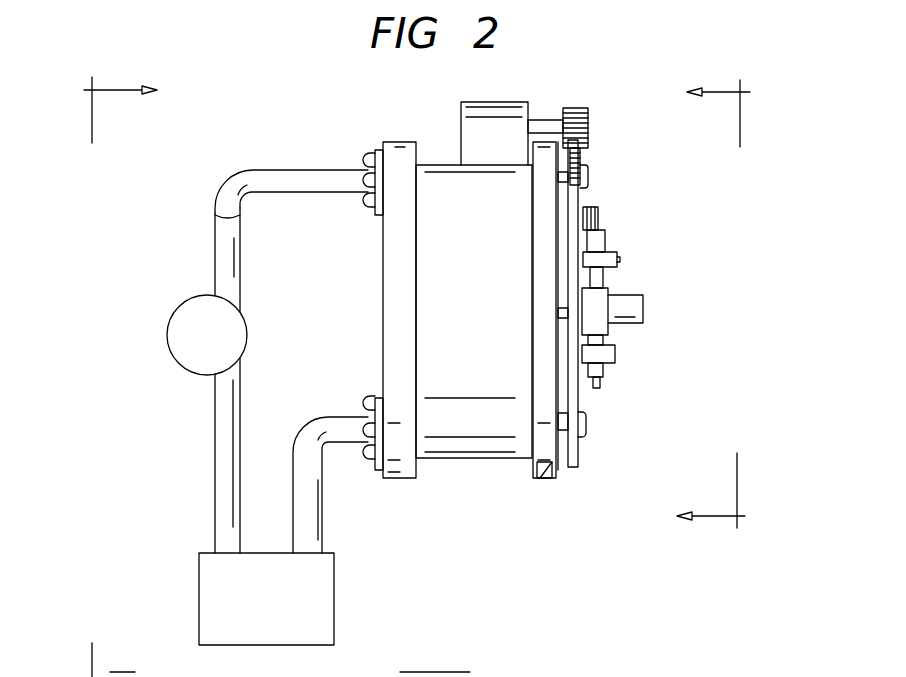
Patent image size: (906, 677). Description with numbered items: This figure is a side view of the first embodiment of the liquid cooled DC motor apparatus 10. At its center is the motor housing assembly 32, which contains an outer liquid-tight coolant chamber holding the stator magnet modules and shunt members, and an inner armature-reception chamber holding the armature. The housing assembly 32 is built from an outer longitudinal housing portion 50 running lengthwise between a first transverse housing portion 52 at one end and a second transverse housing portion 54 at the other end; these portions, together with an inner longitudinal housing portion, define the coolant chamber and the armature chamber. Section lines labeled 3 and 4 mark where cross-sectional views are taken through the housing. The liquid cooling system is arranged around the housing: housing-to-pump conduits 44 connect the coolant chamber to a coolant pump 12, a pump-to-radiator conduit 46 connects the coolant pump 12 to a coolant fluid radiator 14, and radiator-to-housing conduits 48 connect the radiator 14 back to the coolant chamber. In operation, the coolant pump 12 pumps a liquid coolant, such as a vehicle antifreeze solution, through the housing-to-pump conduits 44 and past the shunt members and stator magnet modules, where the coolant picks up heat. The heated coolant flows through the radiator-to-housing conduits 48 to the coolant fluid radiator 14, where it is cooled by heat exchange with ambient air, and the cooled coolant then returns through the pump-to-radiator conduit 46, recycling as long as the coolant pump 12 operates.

The section line 3- 3 is at (110, 99).
The section line 4- 4 is at (725, 305).
The liquid cooled DC motor apparatus 10 is at (643, 245).
The coolant pump 12 is at (187, 328).
The coolant fluid radiator 14 is at (317, 605).
The motor housing assembly 32 is at (547, 478).
The housing-to-pump conduits 44 is at (307, 170).
The pump-to-radiator conduit 46 is at (220, 452).
The radiator-to-housing conduits 48 is at (315, 485).
The outer longitudinal housing portion 50 is at (473, 190).
The first transverse housing portion 52 is at (397, 160).
The second transverse housing portion 54 is at (543, 440).